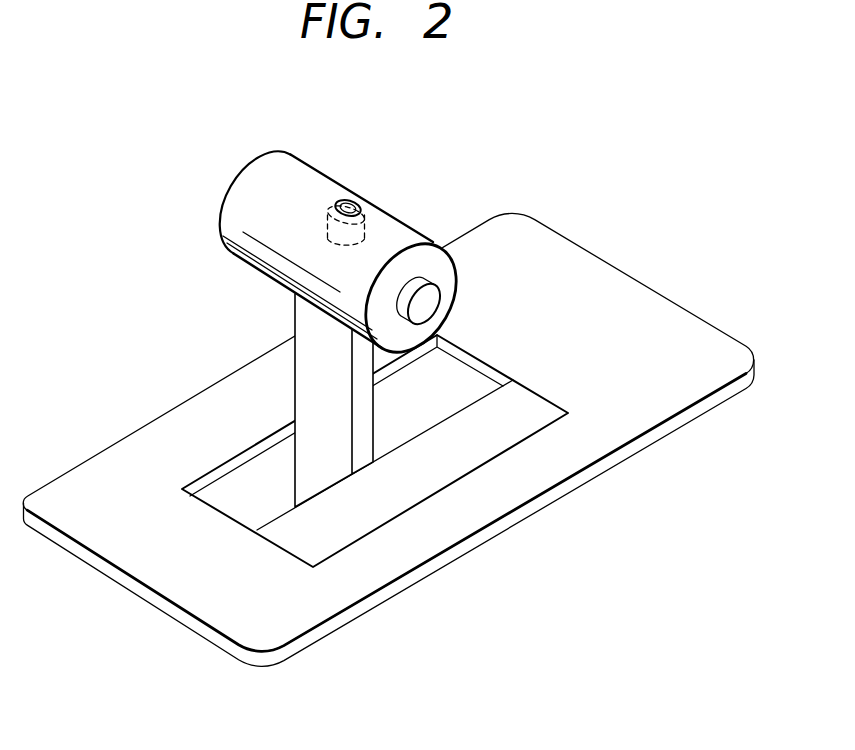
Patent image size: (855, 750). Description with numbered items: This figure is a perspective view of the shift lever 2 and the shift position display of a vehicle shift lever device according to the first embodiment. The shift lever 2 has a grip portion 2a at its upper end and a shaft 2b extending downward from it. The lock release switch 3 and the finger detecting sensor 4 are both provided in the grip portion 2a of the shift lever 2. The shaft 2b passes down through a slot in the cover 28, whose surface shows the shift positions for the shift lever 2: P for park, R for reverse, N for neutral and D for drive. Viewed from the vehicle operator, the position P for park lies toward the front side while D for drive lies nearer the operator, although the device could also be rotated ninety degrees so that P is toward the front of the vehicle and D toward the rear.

The shift lever 2 is at (366, 281).
The grip portion 2a is at (405, 232).
The shaft 2b is at (306, 381).
The lock release switch 3 is at (433, 298).
The finger detecting sensor 4 is at (384, 212).
The cover 28 is at (623, 283).